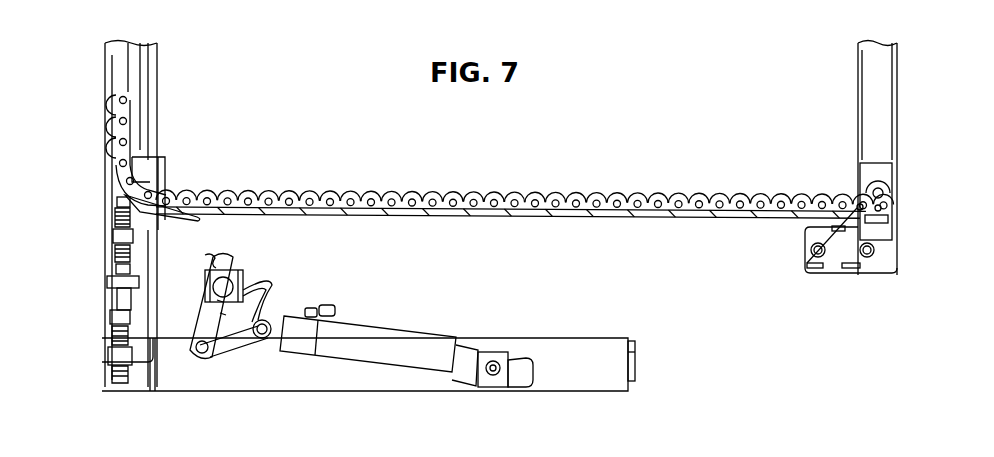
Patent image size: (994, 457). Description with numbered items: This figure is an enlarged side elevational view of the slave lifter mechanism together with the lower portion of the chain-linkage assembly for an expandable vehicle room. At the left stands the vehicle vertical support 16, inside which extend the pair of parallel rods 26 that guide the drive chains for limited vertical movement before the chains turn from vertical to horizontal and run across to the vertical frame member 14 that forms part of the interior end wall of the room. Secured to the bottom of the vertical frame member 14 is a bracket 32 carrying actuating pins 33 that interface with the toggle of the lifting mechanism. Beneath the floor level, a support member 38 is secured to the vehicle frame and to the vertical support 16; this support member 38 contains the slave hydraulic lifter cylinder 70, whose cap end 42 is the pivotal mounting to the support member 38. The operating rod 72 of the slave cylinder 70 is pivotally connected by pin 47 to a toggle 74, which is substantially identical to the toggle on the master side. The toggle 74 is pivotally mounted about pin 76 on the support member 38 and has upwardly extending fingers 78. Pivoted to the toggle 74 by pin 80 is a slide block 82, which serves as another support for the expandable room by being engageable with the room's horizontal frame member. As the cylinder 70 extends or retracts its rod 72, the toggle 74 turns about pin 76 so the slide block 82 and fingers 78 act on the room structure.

The vertical frame member 14 is at (858, 85).
The vehicle vertical support 16 is at (162, 64).
The parallel rods 26 is at (593, 193).
The bracket 32 is at (805, 268).
The actuating pins 33 is at (818, 248).
The support member 38 is at (580, 336).
The cap end 42 is at (490, 350).
The pin 47 is at (268, 342).
The slave hydraulic lifter cylinder 70 is at (387, 338).
The operating rod 72 is at (280, 316).
The toggle 74 is at (195, 323).
The pin 76 is at (205, 347).
The fingers 78 is at (220, 253).
The pin 80 is at (224, 284).
The slide block 82 is at (205, 256).